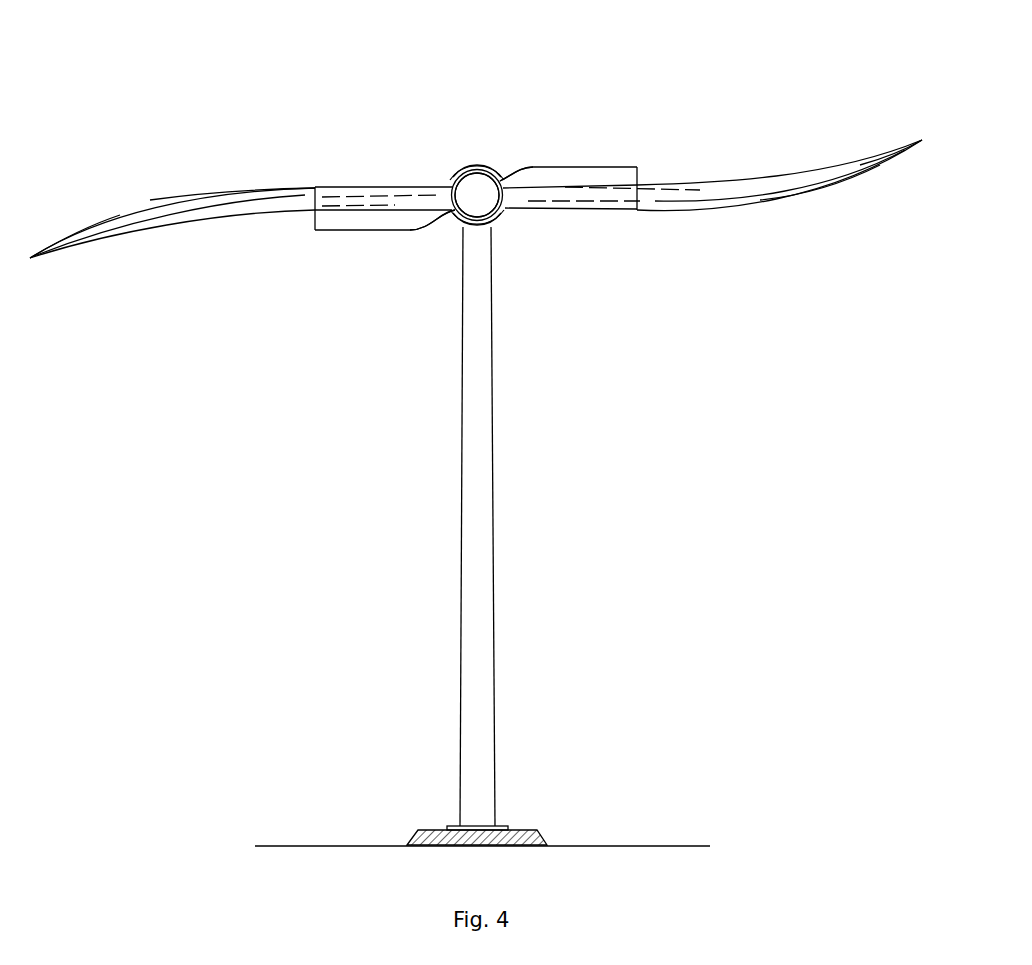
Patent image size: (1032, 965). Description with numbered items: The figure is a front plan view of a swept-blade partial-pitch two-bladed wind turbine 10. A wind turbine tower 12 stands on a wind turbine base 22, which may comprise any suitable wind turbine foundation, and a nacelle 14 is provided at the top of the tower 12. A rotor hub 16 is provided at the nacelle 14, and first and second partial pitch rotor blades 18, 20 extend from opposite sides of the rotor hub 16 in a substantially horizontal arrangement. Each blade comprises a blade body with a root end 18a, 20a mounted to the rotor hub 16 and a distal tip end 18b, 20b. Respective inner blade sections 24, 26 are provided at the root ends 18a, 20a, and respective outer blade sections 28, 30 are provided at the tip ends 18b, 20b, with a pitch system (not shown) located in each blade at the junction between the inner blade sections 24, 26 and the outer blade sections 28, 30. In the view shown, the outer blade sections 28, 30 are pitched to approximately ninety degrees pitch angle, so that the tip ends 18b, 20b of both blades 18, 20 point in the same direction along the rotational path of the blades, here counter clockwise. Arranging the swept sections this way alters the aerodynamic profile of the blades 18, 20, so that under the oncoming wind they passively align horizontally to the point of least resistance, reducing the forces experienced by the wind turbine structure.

The wind turbine 10 is at (186, 51).
The wind turbine tower 12 is at (490, 558).
The nacelle 14 is at (475, 165).
The rotor hub 16 is at (487, 202).
The first partial pitch rotor blade 18 is at (238, 320).
The root end 18a is at (434, 242).
The tip end 18b is at (55, 280).
The second partial pitch rotor blade 20 is at (776, 308).
The root end 20a is at (522, 152).
The tip end 20b is at (875, 128).
The wind turbine base 22 is at (527, 829).
The inner blade section 24 is at (380, 186).
The inner blade section 26 is at (597, 167).
The outer blade section 28 is at (200, 188).
The outer blade section 30 is at (797, 192).